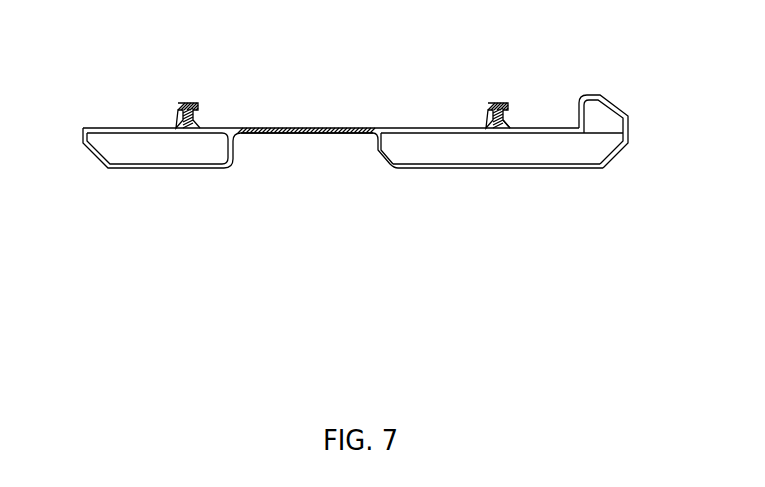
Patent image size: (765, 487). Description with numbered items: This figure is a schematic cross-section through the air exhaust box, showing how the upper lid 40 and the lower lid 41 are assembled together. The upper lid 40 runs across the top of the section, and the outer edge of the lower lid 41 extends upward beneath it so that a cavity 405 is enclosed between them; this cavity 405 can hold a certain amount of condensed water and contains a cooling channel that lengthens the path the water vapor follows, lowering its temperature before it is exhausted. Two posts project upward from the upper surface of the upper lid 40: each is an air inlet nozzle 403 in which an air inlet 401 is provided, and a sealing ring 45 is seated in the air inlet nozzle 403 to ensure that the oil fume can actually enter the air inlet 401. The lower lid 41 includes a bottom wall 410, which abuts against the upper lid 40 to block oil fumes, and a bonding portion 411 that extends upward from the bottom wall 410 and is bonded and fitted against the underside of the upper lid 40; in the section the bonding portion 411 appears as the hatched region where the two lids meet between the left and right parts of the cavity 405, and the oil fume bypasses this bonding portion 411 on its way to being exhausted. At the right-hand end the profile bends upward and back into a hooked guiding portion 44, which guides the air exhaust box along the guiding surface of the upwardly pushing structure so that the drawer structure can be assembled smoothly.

The upper lid 40 is at (127, 121).
The air inlet 401 is at (187, 103).
The air inlet nozzle 403 is at (507, 117).
The cavity 405 is at (407, 148).
The bottom wall 410 is at (540, 163).
The bonding portion 411 is at (310, 134).
The lower lid 41 is at (134, 176).
The guiding portion 44 is at (618, 160).
The sealing ring 45 is at (490, 102).